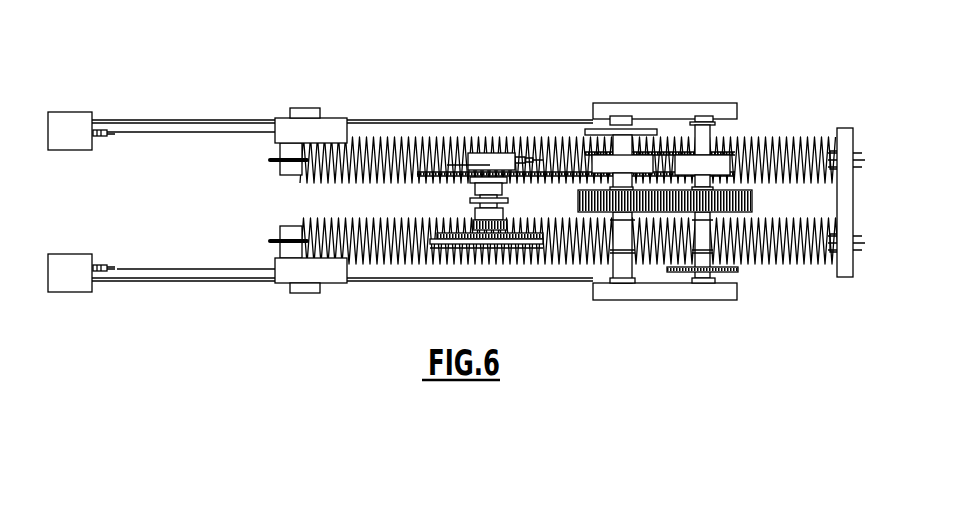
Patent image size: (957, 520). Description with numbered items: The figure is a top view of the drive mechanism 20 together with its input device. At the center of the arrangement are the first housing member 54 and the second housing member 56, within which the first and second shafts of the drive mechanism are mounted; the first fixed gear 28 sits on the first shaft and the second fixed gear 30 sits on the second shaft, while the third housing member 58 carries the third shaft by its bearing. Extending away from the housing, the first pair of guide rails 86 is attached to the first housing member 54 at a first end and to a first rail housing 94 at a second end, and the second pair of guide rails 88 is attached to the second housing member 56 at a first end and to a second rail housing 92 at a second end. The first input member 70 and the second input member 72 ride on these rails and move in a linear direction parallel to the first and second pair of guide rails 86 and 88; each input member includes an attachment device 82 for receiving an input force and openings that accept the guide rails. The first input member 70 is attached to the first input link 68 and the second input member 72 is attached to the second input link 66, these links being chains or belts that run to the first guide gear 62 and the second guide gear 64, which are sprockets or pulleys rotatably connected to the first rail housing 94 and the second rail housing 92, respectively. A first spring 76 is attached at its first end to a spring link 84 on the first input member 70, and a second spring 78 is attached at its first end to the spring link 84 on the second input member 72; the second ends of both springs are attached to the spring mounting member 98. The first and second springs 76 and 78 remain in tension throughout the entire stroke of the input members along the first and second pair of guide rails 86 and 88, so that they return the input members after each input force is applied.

The drive mechanism 20 is at (786, 58).
The first fixed gear 28 is at (752, 200).
The second fixed gear 30 is at (578, 200).
The first housing member 54 is at (659, 300).
The second housing member 56 is at (663, 103).
The third housing member 58 is at (470, 199).
The first guide gear 62 is at (105, 265).
The second guide gear 64 is at (105, 137).
The second input link 66 is at (170, 132).
The first input link 68 is at (170, 269).
The first input member 70 is at (334, 283).
The second input member 72 is at (338, 118).
The first spring 76 is at (758, 265).
The second spring 78 is at (758, 137).
The attachment device 82 is at (302, 108).
The spring link 84 is at (290, 226).
The first pair of guide rails 86 is at (432, 283).
The second pair of guide rails 88 is at (463, 120).
The second rail housing 92 is at (80, 112).
The first rail housing 94 is at (80, 292).
The spring mounting member 98 is at (853, 190).